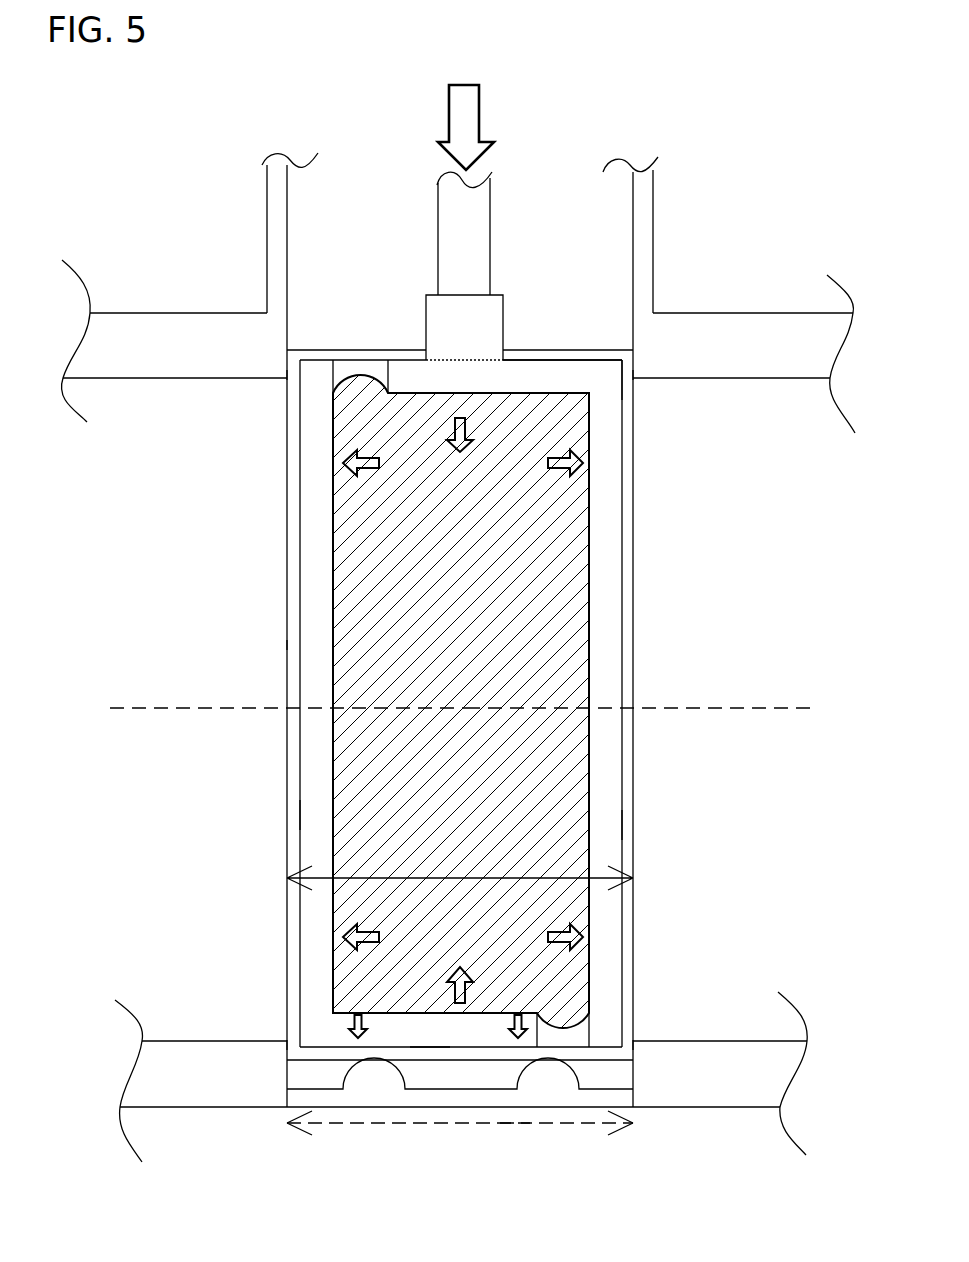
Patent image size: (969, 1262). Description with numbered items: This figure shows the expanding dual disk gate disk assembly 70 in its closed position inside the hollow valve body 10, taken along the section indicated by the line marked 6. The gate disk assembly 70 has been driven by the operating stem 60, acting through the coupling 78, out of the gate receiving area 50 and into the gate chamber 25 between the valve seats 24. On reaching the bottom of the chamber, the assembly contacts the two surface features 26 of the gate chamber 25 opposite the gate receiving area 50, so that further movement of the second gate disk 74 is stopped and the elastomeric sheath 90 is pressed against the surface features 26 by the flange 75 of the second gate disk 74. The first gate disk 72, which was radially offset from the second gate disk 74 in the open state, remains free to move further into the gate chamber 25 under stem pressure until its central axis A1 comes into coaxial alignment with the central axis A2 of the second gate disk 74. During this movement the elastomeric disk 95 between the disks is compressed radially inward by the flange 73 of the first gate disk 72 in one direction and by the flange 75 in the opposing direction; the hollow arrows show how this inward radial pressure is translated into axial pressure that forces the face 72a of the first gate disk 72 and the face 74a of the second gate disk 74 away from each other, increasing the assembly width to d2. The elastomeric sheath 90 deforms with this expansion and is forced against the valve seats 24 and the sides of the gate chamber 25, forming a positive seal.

The section line 6- 6 is at (466, 70).
The hollow valve body 10 is at (205, 361).
The valve seats 24 is at (287, 375).
The gate chamber 25 is at (533, 1122).
The surface features 26 is at (512, 1083).
The gate receiving area 50 is at (385, 281).
The operating stem 60 is at (490, 233).
The gate disk assembly 70 is at (173, 645).
The first gate disk 72 is at (606, 640).
The face 72a is at (623, 818).
The flange 73 is at (533, 370).
The second gate disk 74 is at (316, 678).
The face 74a is at (299, 819).
The flange 75 is at (432, 1030).
The coupling 78 is at (507, 313).
The elastomeric sheath 90 is at (373, 349).
The elastomeric disk 95 is at (475, 617).
The expanded width d2 is at (460, 1005).
The central axis of the first gate disk A1 is at (663, 708).
The central axis of the second gate disk A2 is at (268, 708).